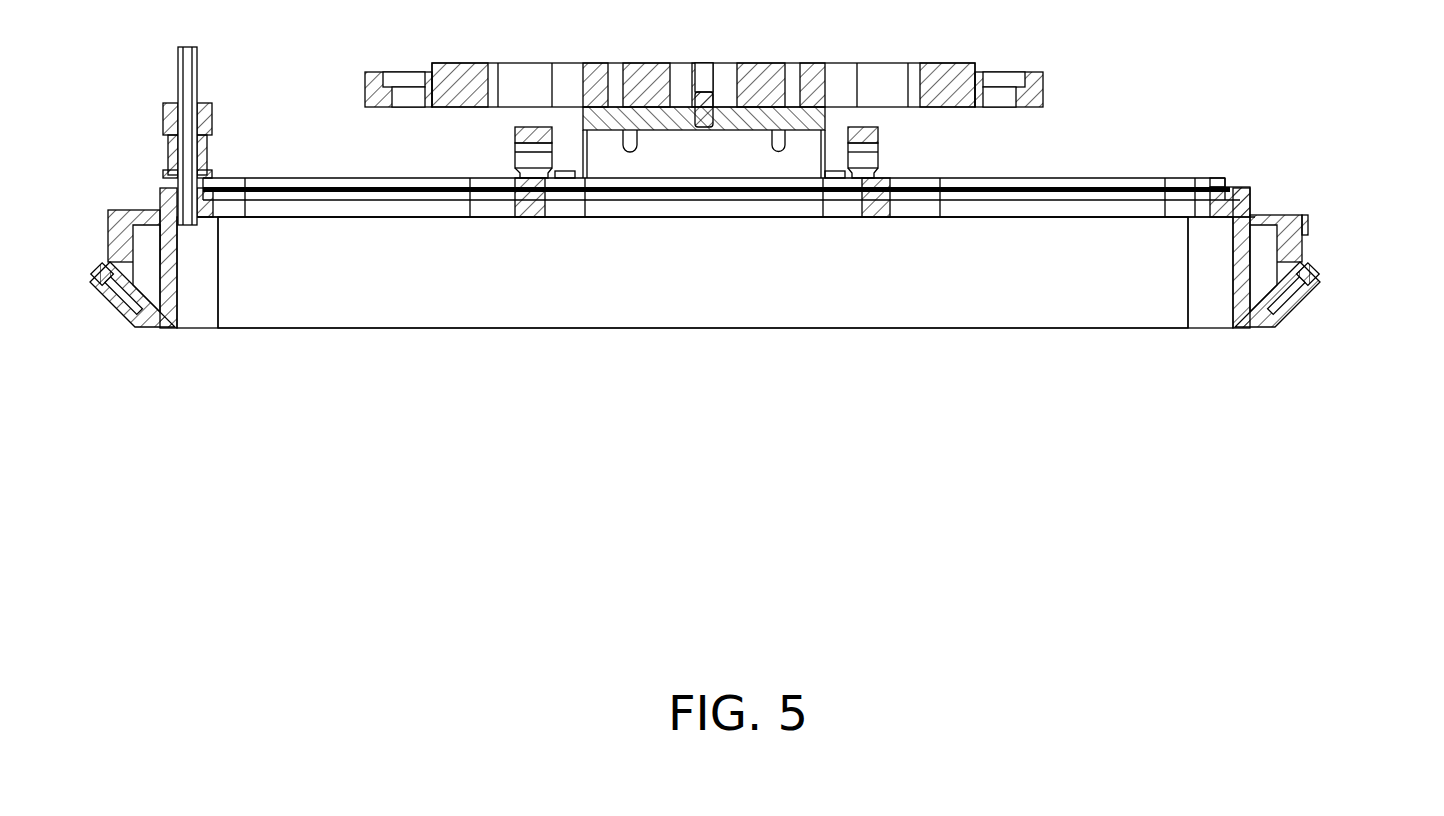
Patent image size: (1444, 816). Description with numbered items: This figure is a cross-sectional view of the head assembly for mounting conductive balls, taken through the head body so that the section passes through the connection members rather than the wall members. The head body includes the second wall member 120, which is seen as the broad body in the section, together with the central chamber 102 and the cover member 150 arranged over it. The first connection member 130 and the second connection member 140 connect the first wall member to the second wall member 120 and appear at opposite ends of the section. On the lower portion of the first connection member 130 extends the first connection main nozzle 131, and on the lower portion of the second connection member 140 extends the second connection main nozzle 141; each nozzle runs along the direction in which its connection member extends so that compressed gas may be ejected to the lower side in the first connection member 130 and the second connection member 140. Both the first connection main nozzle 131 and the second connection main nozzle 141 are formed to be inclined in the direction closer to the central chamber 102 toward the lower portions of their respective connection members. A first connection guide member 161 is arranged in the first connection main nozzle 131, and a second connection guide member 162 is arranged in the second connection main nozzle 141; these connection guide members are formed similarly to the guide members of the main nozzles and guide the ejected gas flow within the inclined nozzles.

The central chamber 102 is at (395, 297).
The second wall member 120 is at (957, 288).
The first connection member 130 is at (1322, 318).
The first connection main nozzle 131 is at (1240, 327).
The second connection member 140 is at (110, 345).
The second connection main nozzle 141 is at (165, 325).
The cover member 150 is at (1043, 210).
The first connection guide member 161 is at (1250, 325).
The second connection guide member 162 is at (155, 320).